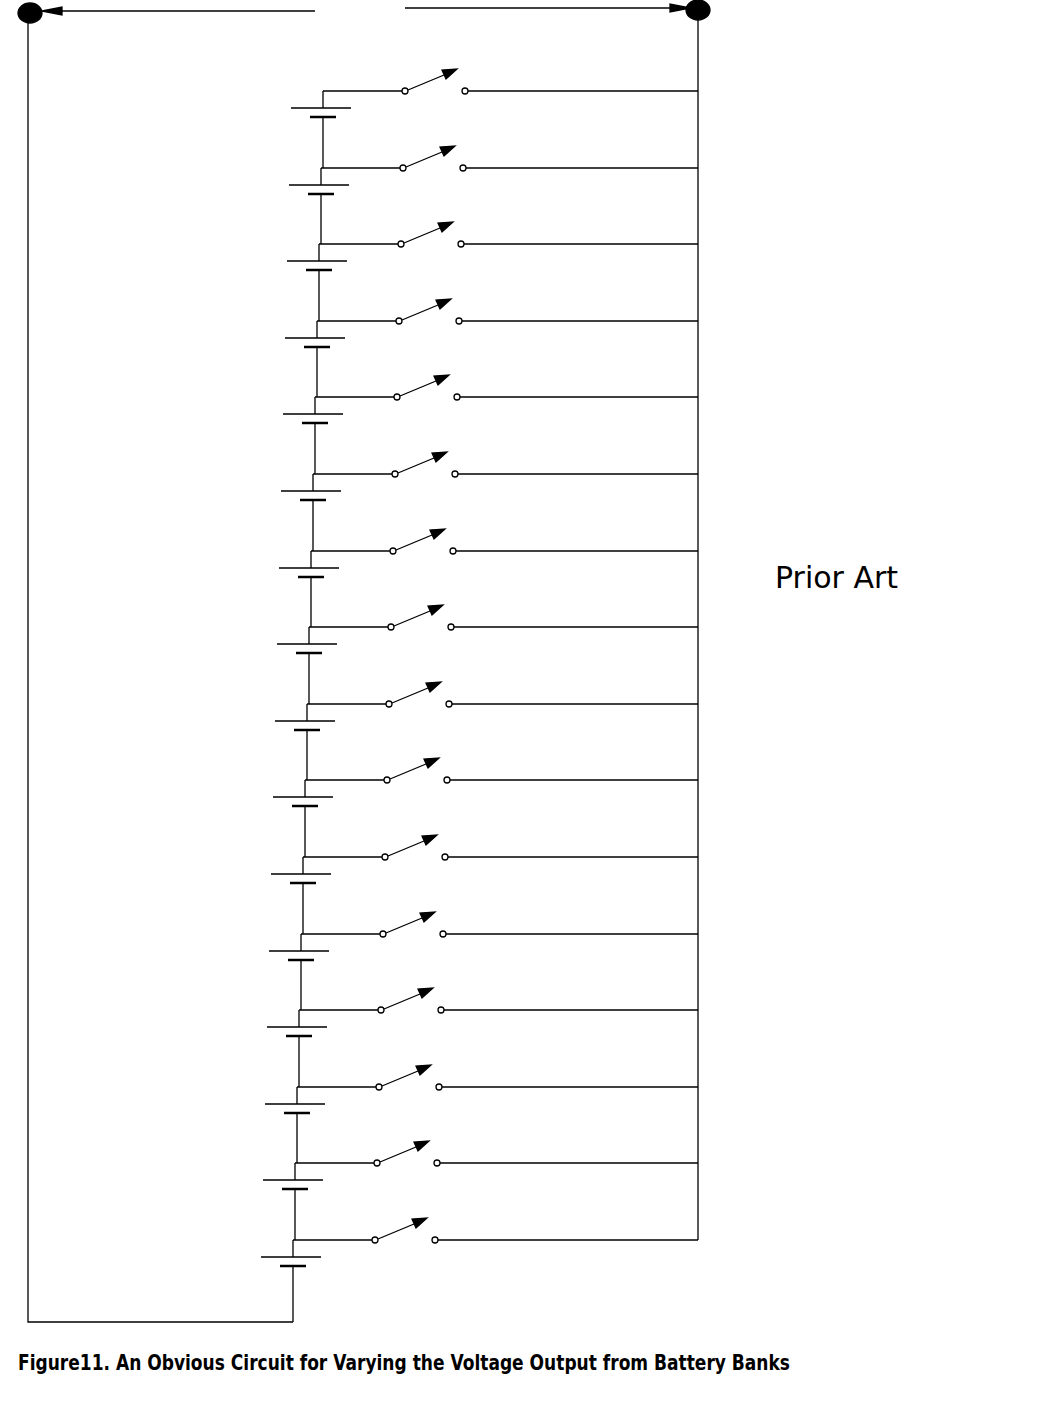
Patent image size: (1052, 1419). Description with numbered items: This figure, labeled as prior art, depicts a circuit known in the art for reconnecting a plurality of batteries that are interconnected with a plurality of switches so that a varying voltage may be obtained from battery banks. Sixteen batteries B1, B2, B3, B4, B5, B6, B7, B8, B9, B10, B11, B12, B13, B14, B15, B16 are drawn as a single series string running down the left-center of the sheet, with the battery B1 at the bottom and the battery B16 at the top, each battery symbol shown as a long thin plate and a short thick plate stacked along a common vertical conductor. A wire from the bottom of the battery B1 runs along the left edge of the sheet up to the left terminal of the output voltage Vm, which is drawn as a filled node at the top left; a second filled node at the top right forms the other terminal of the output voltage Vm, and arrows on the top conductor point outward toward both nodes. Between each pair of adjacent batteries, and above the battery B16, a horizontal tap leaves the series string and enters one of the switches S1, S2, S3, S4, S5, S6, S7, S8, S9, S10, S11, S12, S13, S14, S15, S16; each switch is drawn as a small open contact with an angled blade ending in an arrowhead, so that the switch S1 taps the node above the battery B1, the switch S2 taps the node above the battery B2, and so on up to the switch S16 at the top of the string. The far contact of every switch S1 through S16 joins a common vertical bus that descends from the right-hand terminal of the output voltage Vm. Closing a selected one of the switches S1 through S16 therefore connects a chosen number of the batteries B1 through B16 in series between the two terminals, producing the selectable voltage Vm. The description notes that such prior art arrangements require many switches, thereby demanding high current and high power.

The output voltage terminals Vm is at (364, 14).
The battery bank 1 B1 is at (266, 1281).
The battery bank 2 B2 is at (268, 1201).
The battery bank 3 B3 is at (270, 1125).
The battery bank 4 B4 is at (272, 1048).
The battery bank 5 B5 is at (274, 972).
The battery bank 6 B6 is at (276, 895).
The battery bank 7 B7 is at (278, 818).
The battery bank 8 B8 is at (280, 742).
The battery bank 9 B9 is at (282, 665).
The battery bank 10 B10 is at (284, 589).
The battery bank 11 B11 is at (286, 512).
The battery bank 12 B12 is at (288, 435).
The battery bank 13 B13 is at (290, 359).
The battery bank 14 B14 is at (292, 282).
The battery bank 15 B15 is at (294, 206).
The battery bank 16 B16 is at (296, 129).
The switch 1 S1 is at (495, 1227).
The switch 2 S2 is at (496, 1150).
The switch 3 S3 is at (497, 1074).
The switch 4 S4 is at (498, 997).
The switch 5 S5 is at (499, 921).
The switch 6 S6 is at (500, 844).
The switch 7 S7 is at (501, 767).
The switch 8 S8 is at (502, 691).
The switch 9 S9 is at (503, 614).
The switch 10 S10 is at (504, 538).
The switch 11 S11 is at (505, 461).
The switch 12 S12 is at (506, 384).
The switch 13 S13 is at (507, 308).
The switch 14 S14 is at (508, 231).
The switch 15 S15 is at (509, 155).
The switch 16 S16 is at (510, 78).